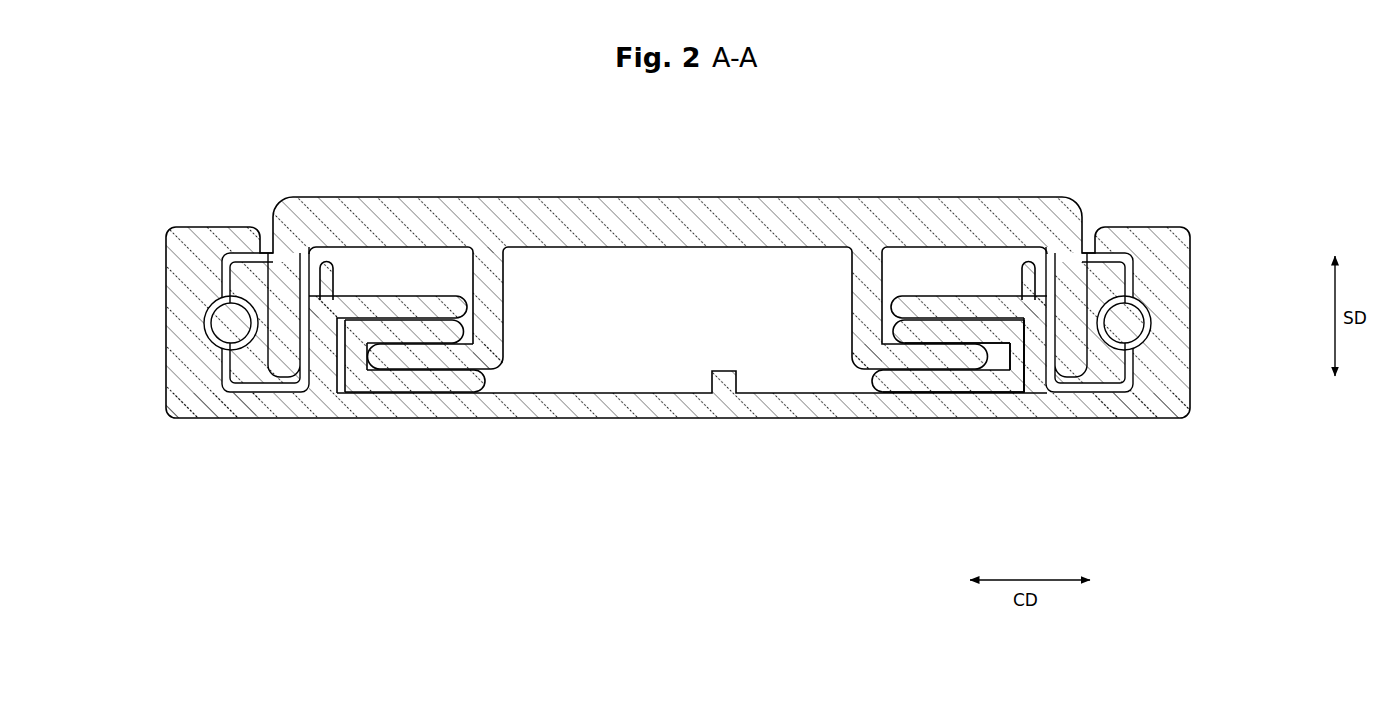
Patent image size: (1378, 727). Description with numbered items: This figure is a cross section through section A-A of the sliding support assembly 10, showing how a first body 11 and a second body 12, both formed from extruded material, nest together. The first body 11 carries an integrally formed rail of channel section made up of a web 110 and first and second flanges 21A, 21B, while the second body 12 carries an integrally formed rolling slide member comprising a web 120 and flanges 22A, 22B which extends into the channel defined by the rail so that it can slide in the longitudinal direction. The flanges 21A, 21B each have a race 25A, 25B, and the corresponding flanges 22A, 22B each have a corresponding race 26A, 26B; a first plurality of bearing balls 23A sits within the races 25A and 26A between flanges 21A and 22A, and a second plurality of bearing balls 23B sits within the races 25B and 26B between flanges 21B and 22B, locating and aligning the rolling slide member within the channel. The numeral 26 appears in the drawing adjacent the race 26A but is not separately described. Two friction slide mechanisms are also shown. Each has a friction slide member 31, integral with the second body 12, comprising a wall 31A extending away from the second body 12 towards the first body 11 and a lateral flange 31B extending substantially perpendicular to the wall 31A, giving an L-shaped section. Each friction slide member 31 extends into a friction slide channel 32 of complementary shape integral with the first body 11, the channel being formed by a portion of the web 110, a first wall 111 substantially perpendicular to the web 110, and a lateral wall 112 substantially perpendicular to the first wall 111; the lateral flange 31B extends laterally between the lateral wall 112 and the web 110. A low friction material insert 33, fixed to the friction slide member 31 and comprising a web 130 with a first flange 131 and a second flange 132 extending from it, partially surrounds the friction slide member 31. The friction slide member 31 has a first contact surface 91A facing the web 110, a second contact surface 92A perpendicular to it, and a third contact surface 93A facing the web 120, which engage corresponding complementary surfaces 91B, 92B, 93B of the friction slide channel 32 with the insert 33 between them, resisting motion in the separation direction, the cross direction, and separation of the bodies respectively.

The sliding support assembly 10 is at (682, 279).
The first body 11 is at (753, 418).
The web 110 is at (673, 395).
The first wall 111 is at (1037, 335).
The lateral wall 112 is at (968, 290).
The second body 12 is at (705, 197).
The web 120 is at (640, 223).
The web 130 is at (357, 345).
The first flange 131 is at (418, 335).
The second flange 132 is at (447, 378).
The first flange 21A is at (177, 287).
The second flange 21B is at (1172, 268).
The flange 22A is at (277, 285).
The flange 22B is at (1072, 270).
The bearing balls 23A is at (203, 323).
The bearing balls 23B is at (1150, 335).
The race 25A is at (210, 297).
The race 25B is at (1157, 330).
The bulge core 26 is at (245, 347).
The race 26A is at (247, 297).
The race 26B is at (1108, 297).
The friction slide member 31 is at (867, 305).
The wall 31A is at (490, 290).
The lateral flange 31B is at (392, 355).
The friction slide channel 32 is at (337, 345).
The low friction material insert 33 is at (490, 385).
The first contact surface 91A is at (892, 368).
The complementary surface 91B is at (920, 397).
The second contact surface 92A is at (993, 362).
The complementary surface 92B is at (1025, 372).
The third contact surface 93A is at (948, 348).
The complementary surface 93B is at (927, 317).